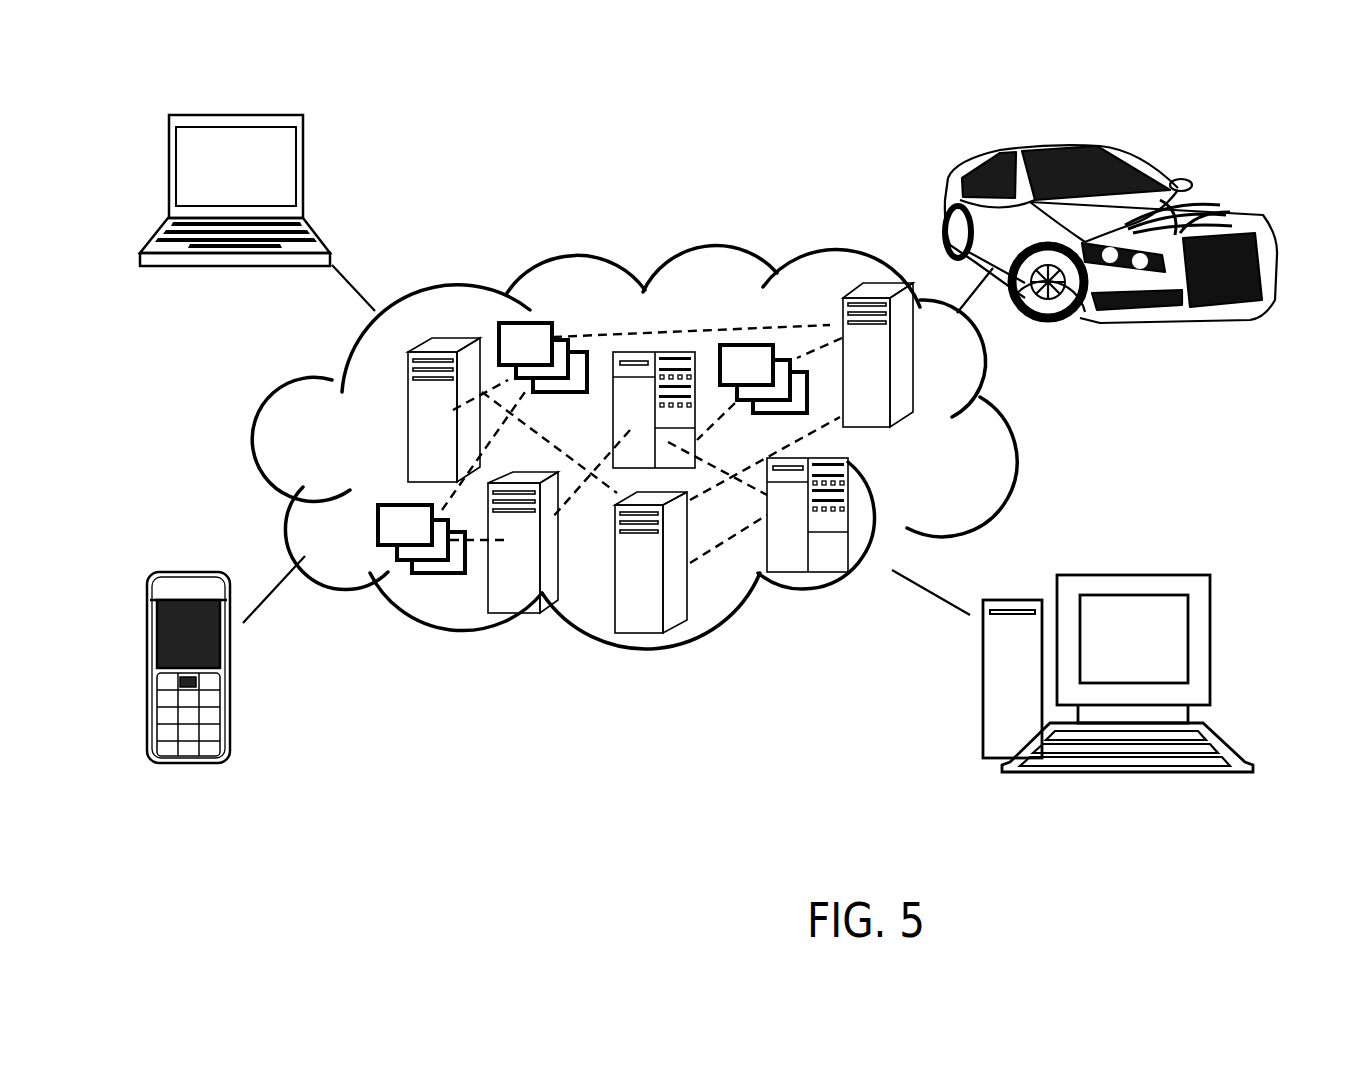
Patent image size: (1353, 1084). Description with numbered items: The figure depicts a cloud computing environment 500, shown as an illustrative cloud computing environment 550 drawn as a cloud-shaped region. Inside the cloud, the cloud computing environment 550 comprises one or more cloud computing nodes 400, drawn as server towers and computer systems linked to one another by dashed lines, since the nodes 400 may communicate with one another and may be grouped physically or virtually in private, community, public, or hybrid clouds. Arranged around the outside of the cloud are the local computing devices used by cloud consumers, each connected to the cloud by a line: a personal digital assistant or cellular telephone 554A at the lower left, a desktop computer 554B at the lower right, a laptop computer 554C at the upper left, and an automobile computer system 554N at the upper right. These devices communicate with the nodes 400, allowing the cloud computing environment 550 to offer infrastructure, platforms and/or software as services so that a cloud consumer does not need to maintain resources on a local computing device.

The cloud computing environment 500 is at (1137, 76).
The cloud computing environment 550 is at (1008, 432).
The cloud computing nodes 400 is at (925, 450).
The personal digital assistant or cellular telephone 554A is at (243, 693).
The desktop computer 554B is at (1010, 675).
The laptop computer 554C is at (318, 199).
The automobile computer system 554N is at (936, 184).